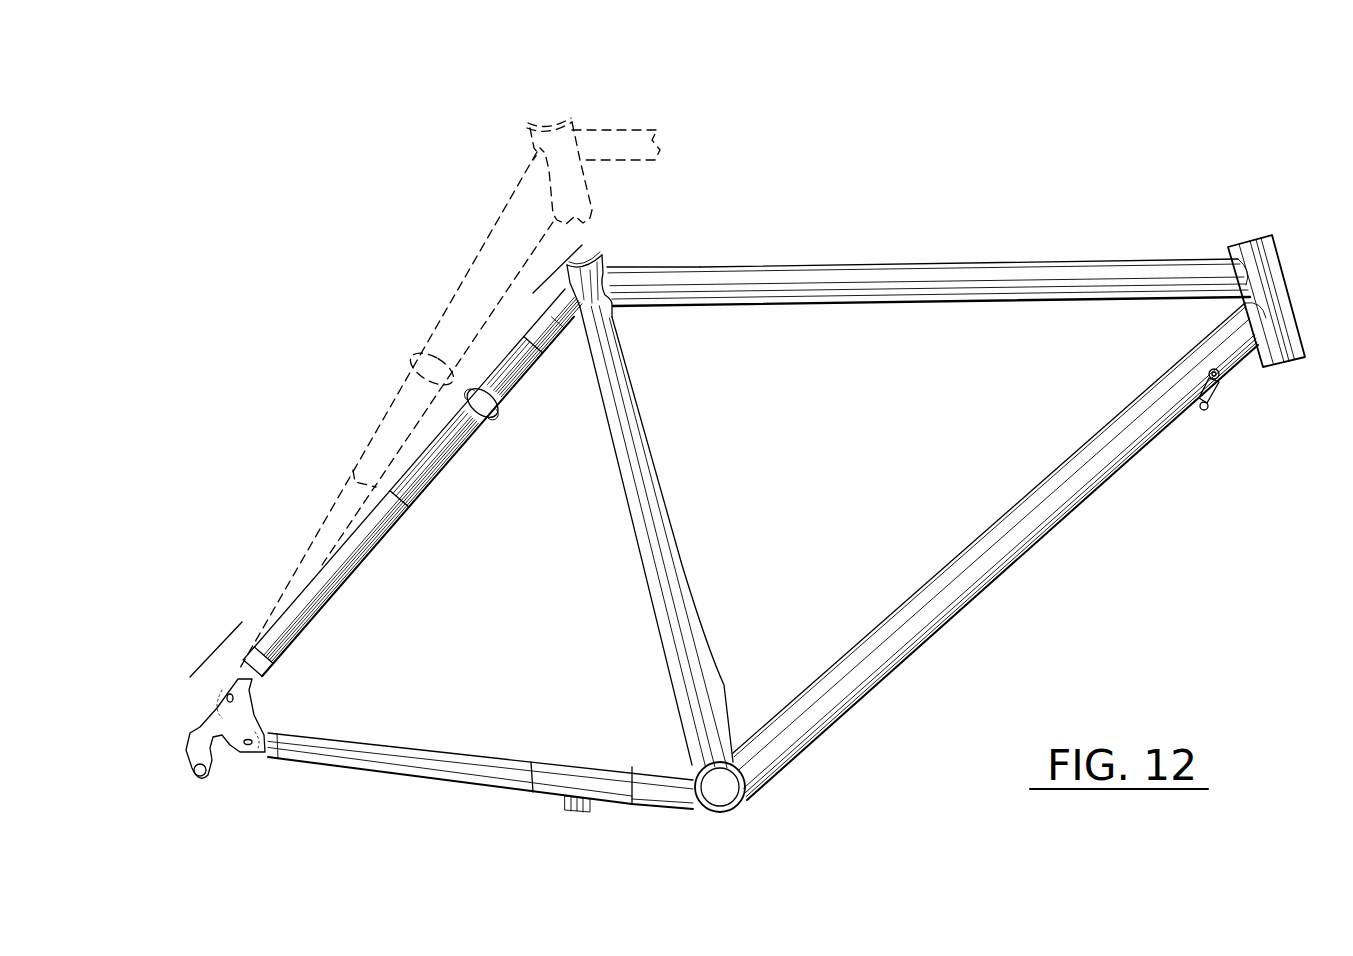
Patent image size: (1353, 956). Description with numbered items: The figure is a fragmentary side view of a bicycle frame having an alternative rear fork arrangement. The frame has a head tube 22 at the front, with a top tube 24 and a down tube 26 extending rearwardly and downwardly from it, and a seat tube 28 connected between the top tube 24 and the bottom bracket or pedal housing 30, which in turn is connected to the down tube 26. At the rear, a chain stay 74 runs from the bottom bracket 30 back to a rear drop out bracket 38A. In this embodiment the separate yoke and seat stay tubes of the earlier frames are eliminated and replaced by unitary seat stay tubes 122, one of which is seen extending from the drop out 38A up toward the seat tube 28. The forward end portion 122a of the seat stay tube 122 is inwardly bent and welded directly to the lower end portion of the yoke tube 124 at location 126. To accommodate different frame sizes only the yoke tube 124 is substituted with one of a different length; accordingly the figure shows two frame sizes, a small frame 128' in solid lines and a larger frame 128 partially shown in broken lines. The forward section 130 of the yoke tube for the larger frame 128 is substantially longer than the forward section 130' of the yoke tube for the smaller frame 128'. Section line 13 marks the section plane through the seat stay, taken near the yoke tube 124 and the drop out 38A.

The head tube 22 is at (1260, 280).
The top tube 24 is at (990, 280).
The down tube 26 is at (983, 553).
The seat tube 28 is at (650, 523).
The bottom bracket or pedal housing 30 is at (743, 803).
The rear drop out bracket 38A is at (222, 718).
The chain stay 74 is at (468, 765).
The unitary seat stay tube 122 is at (422, 490).
The forward end portion of seat stay tube 122a is at (483, 406).
The yoke tube 124 is at (536, 318).
The weld location 126 is at (498, 407).
The larger frame 128 is at (617, 112).
The small frame 128' is at (683, 235).
The forward section of yoke tube for larger frame 130 is at (416, 393).
The forward section of yoke tube for smaller frame 130' is at (535, 397).
The section line 13- 13 is at (565, 283).